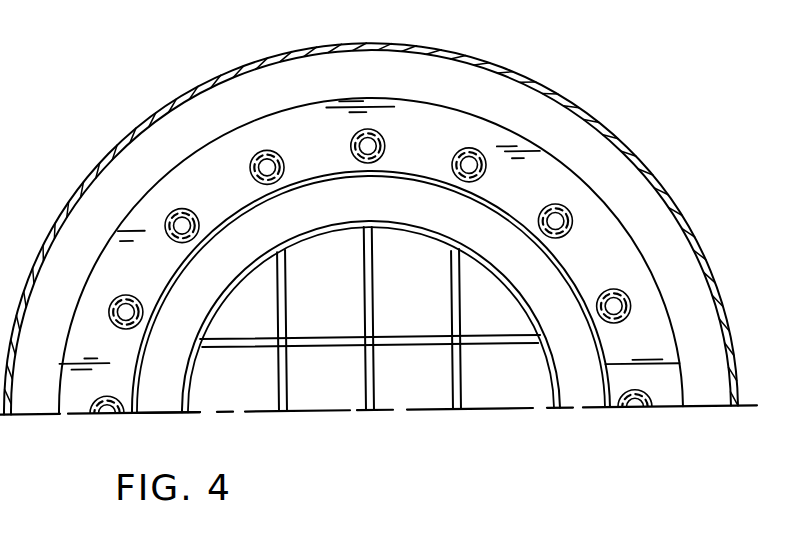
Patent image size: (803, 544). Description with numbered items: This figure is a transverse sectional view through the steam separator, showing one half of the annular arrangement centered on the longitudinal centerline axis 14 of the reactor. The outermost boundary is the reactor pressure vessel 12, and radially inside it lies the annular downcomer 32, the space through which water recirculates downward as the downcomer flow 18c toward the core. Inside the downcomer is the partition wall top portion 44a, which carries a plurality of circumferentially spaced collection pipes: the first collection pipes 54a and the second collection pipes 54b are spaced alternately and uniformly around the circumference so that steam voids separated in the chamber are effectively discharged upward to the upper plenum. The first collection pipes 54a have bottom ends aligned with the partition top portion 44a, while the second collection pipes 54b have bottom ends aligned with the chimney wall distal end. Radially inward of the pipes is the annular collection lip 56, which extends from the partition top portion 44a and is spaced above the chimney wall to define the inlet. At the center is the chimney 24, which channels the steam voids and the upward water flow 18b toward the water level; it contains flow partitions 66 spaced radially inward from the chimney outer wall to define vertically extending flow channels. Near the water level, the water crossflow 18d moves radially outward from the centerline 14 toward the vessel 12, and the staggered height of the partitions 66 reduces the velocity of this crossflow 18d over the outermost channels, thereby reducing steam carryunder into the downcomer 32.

The reactor pressure vessel 12 is at (531, 76).
The annular downcomer 32 is at (207, 137).
The partition wall top portion 44a is at (306, 104).
The first collection pipes 54a is at (384, 141).
The second collection pipes 54b is at (249, 160).
The annular collection lip 56 is at (316, 177).
The flow partitions 66 is at (279, 379).
The longitudinal centerline axis 14 is at (374, 412).
The chimney 24 is at (174, 403).
The water flow 18b is at (533, 275).
The downcomer flow 18c is at (614, 187).
The water crossflow 18d is at (684, 264).